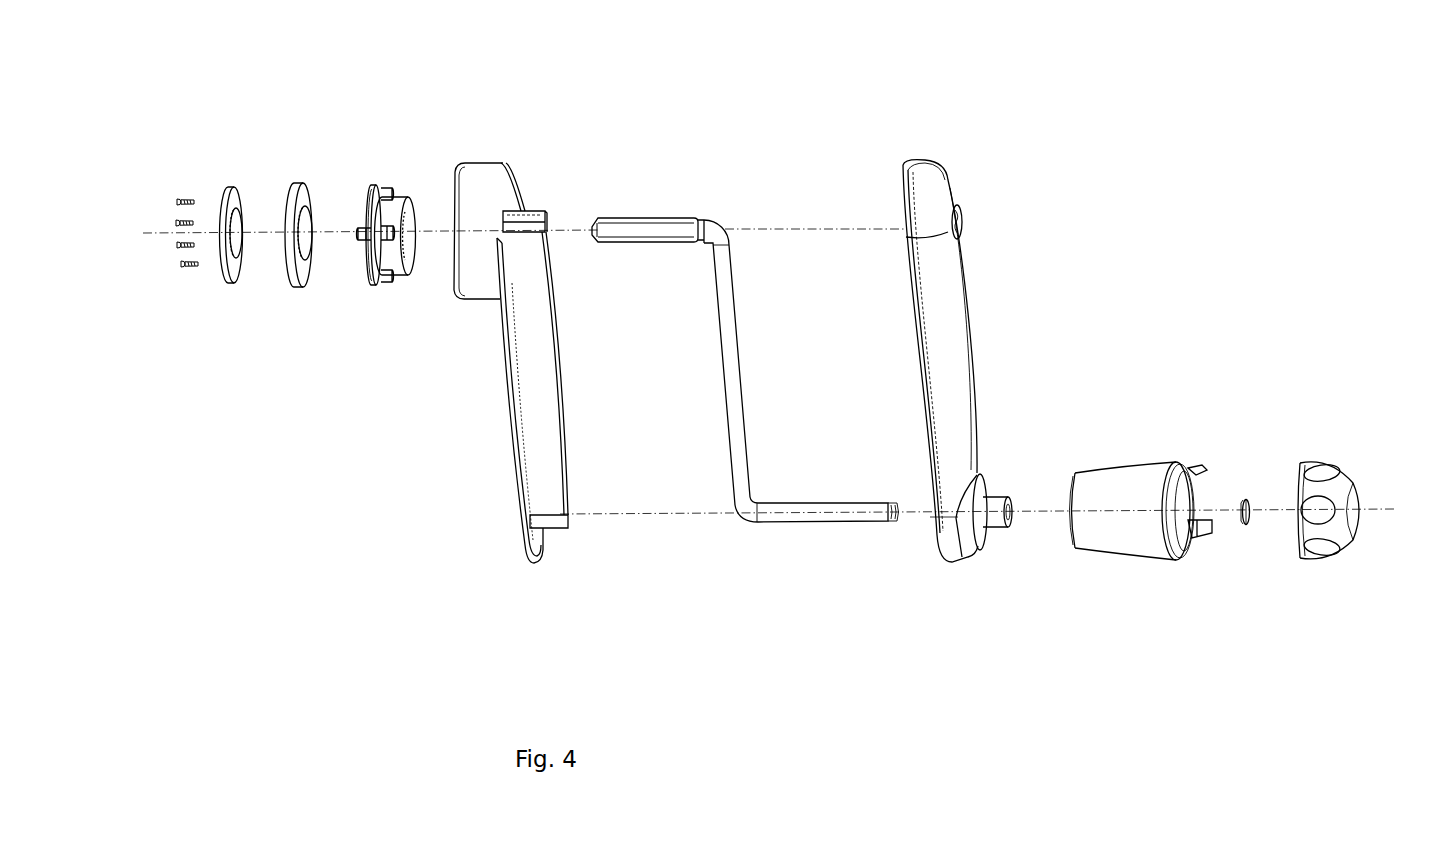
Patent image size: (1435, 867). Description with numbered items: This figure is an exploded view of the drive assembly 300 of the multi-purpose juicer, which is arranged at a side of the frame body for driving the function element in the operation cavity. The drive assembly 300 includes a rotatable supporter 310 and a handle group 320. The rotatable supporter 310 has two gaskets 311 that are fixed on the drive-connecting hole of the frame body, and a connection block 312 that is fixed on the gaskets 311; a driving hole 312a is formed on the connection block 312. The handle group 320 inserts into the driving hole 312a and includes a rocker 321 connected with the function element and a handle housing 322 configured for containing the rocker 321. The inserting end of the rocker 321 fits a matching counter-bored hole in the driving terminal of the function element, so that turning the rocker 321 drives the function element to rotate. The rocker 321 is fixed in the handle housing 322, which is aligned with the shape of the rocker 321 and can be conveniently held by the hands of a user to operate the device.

The drive assembly 300 is at (436, 628).
The rotatable supporter 310 is at (299, 343).
The gaskets 311 is at (286, 178).
The connection block 312 is at (380, 201).
The driving hole 312a is at (410, 208).
The handle group 320 is at (873, 613).
The rocker 321 is at (763, 526).
The handle housing 322 is at (539, 481).